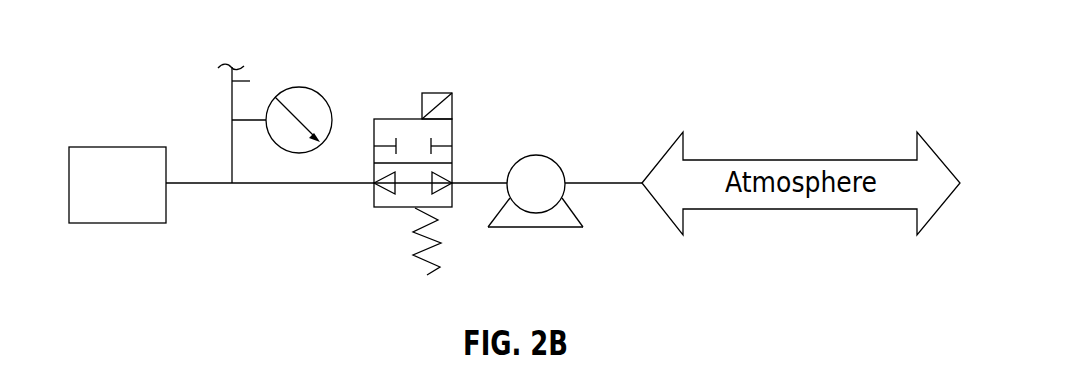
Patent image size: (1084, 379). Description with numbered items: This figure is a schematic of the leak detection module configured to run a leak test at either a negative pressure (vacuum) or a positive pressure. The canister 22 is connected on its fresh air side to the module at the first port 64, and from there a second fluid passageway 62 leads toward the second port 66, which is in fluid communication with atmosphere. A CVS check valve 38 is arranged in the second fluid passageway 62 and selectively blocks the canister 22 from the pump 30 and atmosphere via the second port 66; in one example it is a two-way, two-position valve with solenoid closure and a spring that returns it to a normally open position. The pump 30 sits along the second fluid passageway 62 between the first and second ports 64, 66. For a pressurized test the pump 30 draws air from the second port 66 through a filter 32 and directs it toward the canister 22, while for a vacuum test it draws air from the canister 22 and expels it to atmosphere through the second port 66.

The canister 22 is at (133, 196).
The pump 30 is at (535, 155).
The filter 32 is at (298, 87).
The CVS check valve 38 is at (470, 127).
The second fluid passageway 62 is at (322, 197).
The first port 64 is at (203, 171).
The second port 66 is at (608, 197).